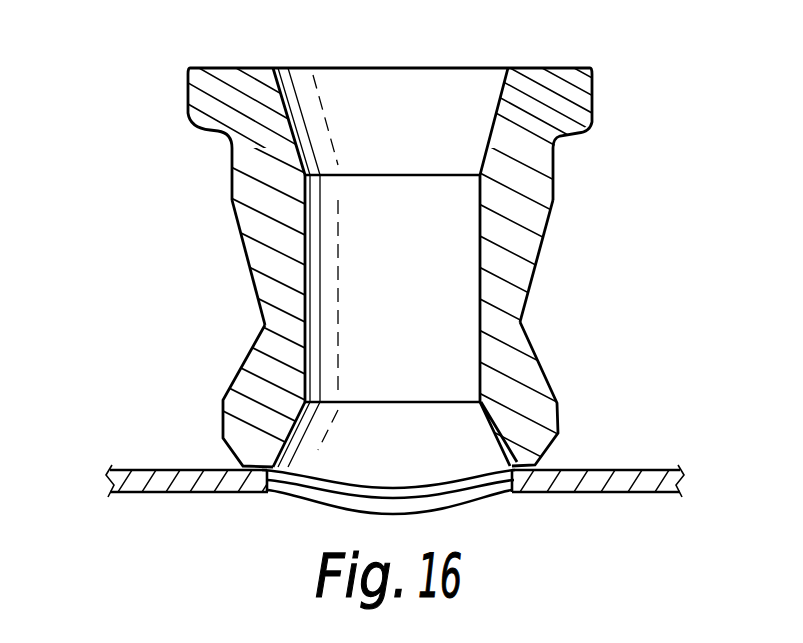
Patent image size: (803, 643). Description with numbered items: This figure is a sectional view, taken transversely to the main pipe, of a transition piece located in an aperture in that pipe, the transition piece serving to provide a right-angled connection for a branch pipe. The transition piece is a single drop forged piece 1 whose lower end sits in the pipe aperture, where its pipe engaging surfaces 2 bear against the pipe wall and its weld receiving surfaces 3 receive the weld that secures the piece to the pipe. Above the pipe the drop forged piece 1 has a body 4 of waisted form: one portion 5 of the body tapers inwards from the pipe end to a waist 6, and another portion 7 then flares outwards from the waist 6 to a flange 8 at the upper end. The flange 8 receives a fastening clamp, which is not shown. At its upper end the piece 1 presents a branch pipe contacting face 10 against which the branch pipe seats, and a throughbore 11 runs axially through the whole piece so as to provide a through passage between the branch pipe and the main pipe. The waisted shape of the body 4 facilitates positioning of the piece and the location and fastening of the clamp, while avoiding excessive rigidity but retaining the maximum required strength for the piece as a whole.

The drop forged piece 1 is at (168, 199).
The pipe engaging surfaces 2 is at (260, 480).
The weld receiving surfaces 3 is at (250, 468).
The body 4 is at (564, 256).
The portion tapering to a waist 5 is at (235, 373).
The waist 6 is at (520, 322).
The portion flaring outwards to a flange 7 is at (247, 270).
The flange 8 is at (188, 93).
The branch pipe contacting face 10 is at (250, 68).
The throughbore 11 is at (447, 107).